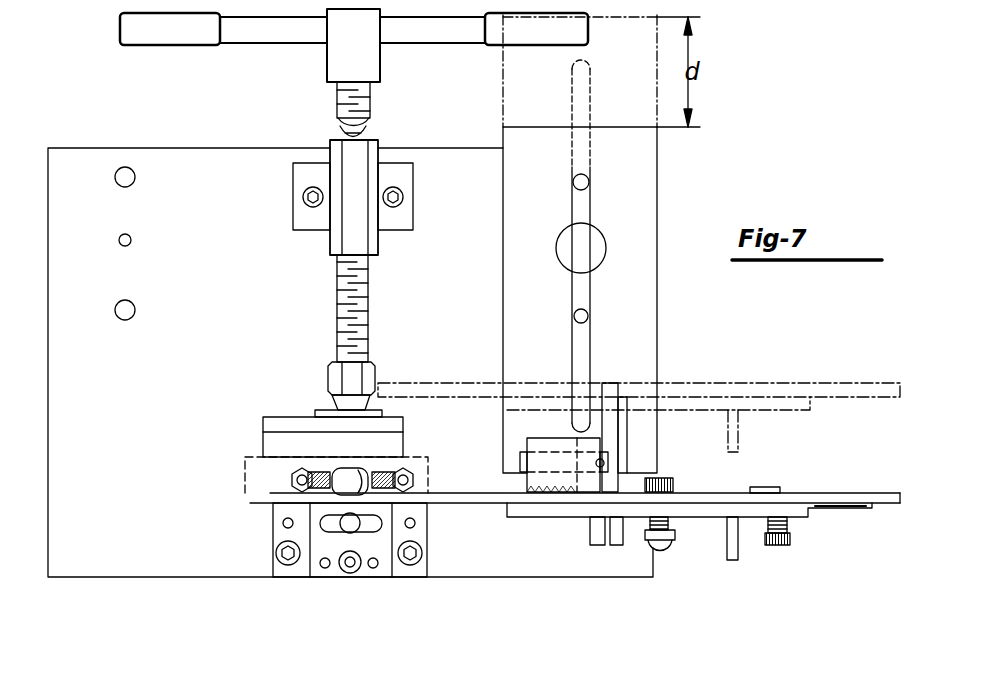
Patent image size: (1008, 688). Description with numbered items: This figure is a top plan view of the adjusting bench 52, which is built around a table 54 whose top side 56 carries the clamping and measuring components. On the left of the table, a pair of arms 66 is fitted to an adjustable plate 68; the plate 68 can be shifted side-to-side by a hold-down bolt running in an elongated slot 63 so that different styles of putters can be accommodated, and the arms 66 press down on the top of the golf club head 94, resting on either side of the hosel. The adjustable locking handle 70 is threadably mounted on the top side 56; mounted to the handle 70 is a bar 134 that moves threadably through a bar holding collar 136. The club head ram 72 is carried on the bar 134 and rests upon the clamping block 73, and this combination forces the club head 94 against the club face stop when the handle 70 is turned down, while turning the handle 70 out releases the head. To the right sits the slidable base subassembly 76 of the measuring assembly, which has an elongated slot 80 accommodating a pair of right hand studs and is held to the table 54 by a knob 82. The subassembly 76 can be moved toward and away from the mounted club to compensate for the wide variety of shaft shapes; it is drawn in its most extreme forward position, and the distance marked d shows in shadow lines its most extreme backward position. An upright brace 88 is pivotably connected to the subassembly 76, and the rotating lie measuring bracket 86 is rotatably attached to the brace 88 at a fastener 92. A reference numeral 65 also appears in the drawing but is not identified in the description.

The adjusting bench 52 is at (128, 146).
The table 54 is at (182, 178).
The top side 56 is at (182, 287).
The elongated slot 63 is at (393, 537).
The locating pin 65 is at (321, 568).
The arms 66 is at (272, 497).
The adjustable plate 68 is at (352, 572).
The adjustable locking handle 70 is at (246, 30).
The club head ram 72 is at (348, 382).
The clamping block 73 is at (263, 445).
The slidable base subassembly 76 is at (628, 352).
The elongated slot 80 is at (590, 182).
The knob 82 is at (592, 255).
The rotating lie measuring bracket 86 is at (760, 512).
The upright brace 88 is at (815, 495).
The fastener 92 is at (663, 548).
The golf club head 94 is at (253, 468).
The bar 134 is at (357, 327).
The bar holding collar 136 is at (357, 208).